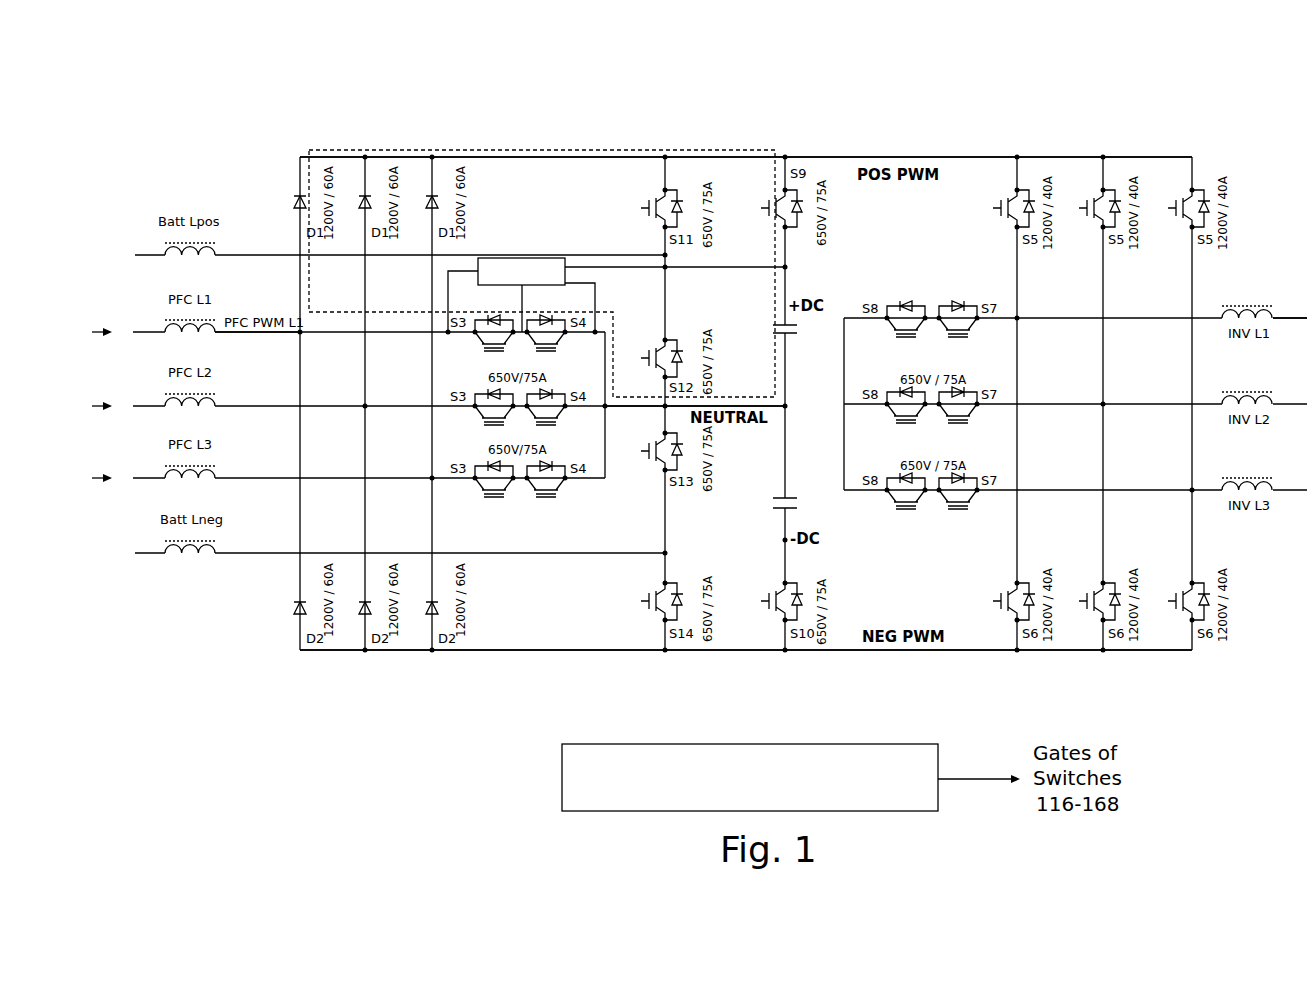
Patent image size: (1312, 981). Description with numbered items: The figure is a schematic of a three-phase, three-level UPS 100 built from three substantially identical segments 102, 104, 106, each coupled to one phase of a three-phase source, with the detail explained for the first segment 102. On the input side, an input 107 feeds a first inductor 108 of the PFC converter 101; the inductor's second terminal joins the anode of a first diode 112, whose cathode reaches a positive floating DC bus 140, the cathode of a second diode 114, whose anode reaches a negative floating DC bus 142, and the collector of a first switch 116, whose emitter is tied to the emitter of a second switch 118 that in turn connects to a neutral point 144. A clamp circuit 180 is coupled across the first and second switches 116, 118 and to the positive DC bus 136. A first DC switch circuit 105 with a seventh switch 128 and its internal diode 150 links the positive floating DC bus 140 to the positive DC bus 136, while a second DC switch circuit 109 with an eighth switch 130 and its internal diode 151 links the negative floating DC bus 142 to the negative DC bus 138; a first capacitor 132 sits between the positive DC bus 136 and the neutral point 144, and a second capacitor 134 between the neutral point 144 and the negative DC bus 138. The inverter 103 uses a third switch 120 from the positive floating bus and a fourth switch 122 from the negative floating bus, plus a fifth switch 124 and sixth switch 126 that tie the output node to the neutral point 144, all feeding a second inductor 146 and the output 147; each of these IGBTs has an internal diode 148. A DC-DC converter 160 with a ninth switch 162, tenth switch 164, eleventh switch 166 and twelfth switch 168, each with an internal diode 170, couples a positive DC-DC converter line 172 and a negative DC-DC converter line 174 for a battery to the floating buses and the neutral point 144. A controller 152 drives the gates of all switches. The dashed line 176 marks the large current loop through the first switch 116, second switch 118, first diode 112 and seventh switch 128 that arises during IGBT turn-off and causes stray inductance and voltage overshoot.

The UPS 100 is at (268, 111).
The PFC converter 101 is at (278, 695).
The first segment 102 is at (79, 332).
The inverter 103 is at (1127, 91).
The second segment 104 is at (79, 406).
The first DC switch circuit 105 is at (806, 134).
The third segment 106 is at (79, 478).
The input 107 is at (148, 335).
The first inductor 108 is at (216, 334).
The second DC switch circuit 109 is at (806, 660).
The first diode 112 is at (296, 206).
The second diode 114 is at (297, 616).
The first switch 116 is at (486, 351).
The second switch 118 is at (556, 351).
The third switch 120 is at (996, 208).
The fourth switch 122 is at (996, 602).
The fifth switch 124 is at (962, 338).
The sixth switch 126 is at (898, 338).
The seventh switch 128 is at (768, 214).
The eighth switch 130 is at (763, 608).
The first capacitor 132 is at (790, 322).
The second capacitor 134 is at (782, 495).
The positive DC bus 136 is at (787, 266).
The negative DC bus 138 is at (784, 541).
The positive floating DC bus 140 is at (548, 160).
The negative floating DC bus 142 is at (535, 652).
The neutral point 144 is at (788, 405).
The second inductor 146 is at (1258, 304).
The output 147 is at (1294, 320).
The internal diode 148 is at (490, 322).
The internal diode 150 is at (798, 212).
The internal diode 151 is at (802, 598).
The controller 152 is at (900, 753).
The DC-DC converter 160 is at (683, 127).
The ninth switch 162 is at (643, 210).
The tenth switch 164 is at (643, 358).
The eleventh switch 166 is at (643, 452).
The twelfth switch 168 is at (643, 602).
The internal diode 170 is at (690, 192).
The positive DC-DC converter line 172 is at (150, 254).
The negative DC-DC converter line 174 is at (138, 555).
The dashed line 176 is at (505, 150).
The clamp circuit 180 is at (548, 262).